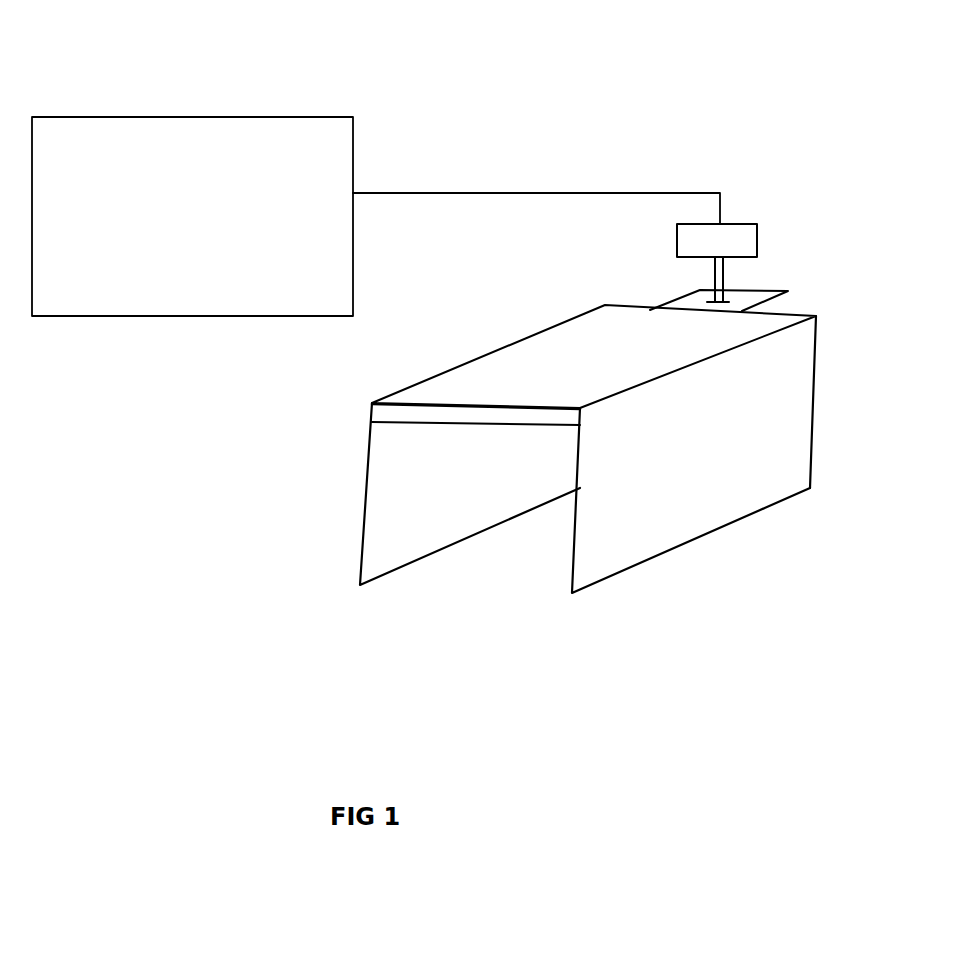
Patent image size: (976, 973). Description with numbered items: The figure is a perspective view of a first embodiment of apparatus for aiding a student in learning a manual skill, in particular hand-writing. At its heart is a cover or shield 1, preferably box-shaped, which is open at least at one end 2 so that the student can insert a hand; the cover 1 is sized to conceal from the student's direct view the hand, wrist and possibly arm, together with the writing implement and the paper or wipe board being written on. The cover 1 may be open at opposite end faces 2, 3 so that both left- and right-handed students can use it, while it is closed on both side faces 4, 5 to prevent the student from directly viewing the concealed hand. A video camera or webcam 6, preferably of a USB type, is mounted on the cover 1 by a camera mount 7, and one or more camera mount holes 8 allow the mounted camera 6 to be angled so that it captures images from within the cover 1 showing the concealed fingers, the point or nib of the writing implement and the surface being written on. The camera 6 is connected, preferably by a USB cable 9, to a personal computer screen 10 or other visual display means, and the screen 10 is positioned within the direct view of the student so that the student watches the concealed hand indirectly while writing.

The cover 1 is at (710, 553).
The open end 2 is at (483, 571).
The opposite end face 3 is at (822, 365).
The side face 4 is at (492, 343).
The side face 5 is at (647, 517).
The video camera 6 is at (738, 225).
The camera mount 7 is at (663, 305).
The camera mount holes 8 is at (747, 290).
The USB cable 9 is at (465, 192).
The personal computer screen 10 is at (192, 146).